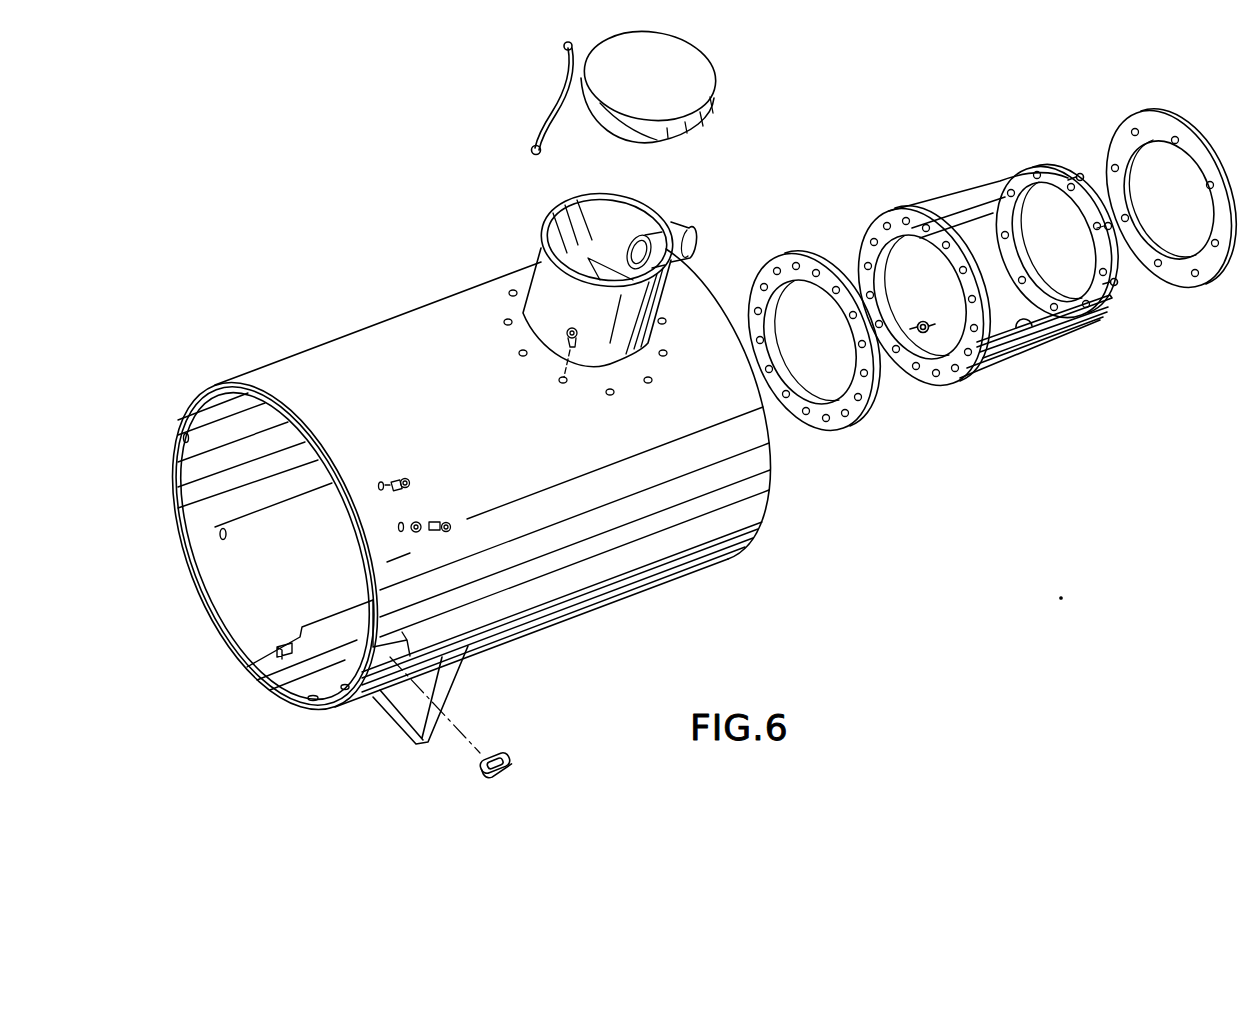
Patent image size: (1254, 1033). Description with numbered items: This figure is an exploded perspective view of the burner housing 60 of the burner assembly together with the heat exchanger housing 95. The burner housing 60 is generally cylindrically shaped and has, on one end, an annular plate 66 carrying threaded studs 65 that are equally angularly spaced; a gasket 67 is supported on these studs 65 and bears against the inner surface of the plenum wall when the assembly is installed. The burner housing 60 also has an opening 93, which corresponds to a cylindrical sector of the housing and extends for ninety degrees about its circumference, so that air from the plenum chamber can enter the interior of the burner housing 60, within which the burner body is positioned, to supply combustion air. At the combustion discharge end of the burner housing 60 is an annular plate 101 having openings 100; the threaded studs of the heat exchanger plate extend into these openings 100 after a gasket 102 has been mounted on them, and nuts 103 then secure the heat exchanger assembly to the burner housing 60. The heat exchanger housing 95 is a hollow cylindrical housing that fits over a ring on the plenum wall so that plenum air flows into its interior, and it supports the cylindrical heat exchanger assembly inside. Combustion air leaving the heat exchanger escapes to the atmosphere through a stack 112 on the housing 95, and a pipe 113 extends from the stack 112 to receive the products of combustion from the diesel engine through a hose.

The heat exchanger housing 95 is at (381, 316).
The stack 112 is at (536, 257).
The pipe 113 is at (675, 226).
The gasket 102 is at (779, 268).
The annular plate 101 is at (884, 231).
The burner housing 60 is at (992, 268).
The openings 100 is at (910, 364).
The nuts 103 is at (944, 298).
The opening 93 is at (1030, 328).
The threaded studs 65 is at (1080, 173).
The annular plate 66 is at (1118, 284).
The gasket 67 is at (1158, 118).